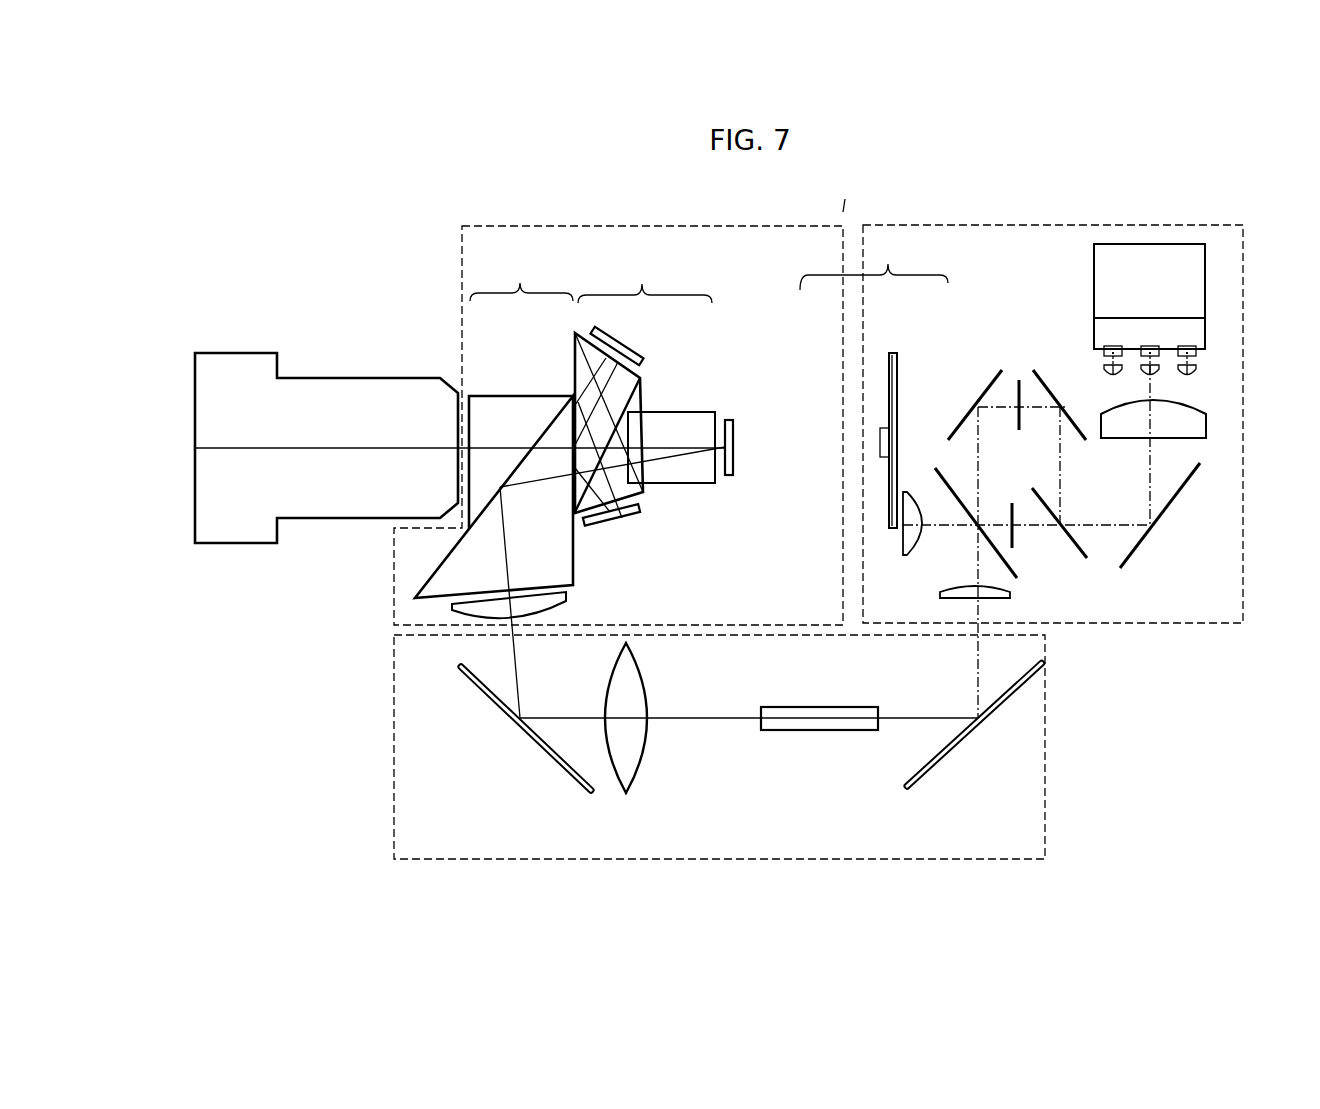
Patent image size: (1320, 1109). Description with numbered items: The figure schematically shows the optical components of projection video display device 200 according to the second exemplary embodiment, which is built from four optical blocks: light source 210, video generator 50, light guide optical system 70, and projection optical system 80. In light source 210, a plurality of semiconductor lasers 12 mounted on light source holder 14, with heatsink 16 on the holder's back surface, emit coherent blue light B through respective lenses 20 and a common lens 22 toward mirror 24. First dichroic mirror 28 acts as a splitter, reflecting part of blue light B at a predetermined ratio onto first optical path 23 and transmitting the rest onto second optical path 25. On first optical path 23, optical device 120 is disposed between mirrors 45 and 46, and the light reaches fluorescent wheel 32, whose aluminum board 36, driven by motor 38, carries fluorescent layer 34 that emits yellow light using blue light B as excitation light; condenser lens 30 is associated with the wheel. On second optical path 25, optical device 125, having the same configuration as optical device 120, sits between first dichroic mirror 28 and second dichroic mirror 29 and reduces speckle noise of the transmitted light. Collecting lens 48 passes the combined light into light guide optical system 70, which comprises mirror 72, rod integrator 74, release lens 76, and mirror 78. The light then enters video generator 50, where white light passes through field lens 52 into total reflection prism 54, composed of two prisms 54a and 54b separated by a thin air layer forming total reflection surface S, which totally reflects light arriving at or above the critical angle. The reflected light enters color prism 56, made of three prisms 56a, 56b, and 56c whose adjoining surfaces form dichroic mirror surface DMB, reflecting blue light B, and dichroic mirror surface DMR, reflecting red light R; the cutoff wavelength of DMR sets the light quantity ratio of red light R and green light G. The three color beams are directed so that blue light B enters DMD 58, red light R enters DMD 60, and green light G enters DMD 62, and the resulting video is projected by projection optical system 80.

The projection optical system 80 is at (372, 378).
The video generator 50 is at (637, 226).
The projection video display device 200 is at (832, 190).
The total reflection prism 54 is at (494, 486).
The prism 54a is at (495, 412).
The prism 54b is at (560, 437).
The total reflection surface S is at (545, 448).
The field lens 52 is at (566, 605).
The color prism 56 is at (646, 391).
The prism 56a is at (627, 385).
The prism 56b is at (685, 418).
The prism 56c is at (630, 490).
The dichroic mirror surface DMB is at (640, 412).
The dichroic mirror surface DMR is at (645, 475).
The DMD 58 is at (627, 348).
The DMD 60 is at (628, 522).
The DMD 62 is at (735, 432).
The blue light B is at (624, 330).
The green light G is at (749, 447).
The red light R is at (605, 540).
The light source 210 is at (1090, 225).
The fluorescent wheel 32 is at (874, 381).
The fluorescent layer 34 is at (898, 365).
The aluminum board 36 is at (890, 360).
The motor 38 is at (880, 428).
The optical device 120 is at (1018, 380).
The mirror 46 is at (985, 395).
The mirror 45 is at (1043, 375).
The heatsink 16 is at (1186, 262).
The light source holder 14 is at (1168, 333).
The semiconductor laser 12 is at (1183, 349).
The lens 20 is at (1195, 372).
The lens 22 is at (1206, 428).
The second optical path 25 is at (1037, 522).
The first optical path 23 is at (1061, 465).
The first dichroic mirror 28 is at (1065, 530).
The mirror 24 is at (1185, 485).
The second dichroic mirror 29 is at (958, 503).
The condenser lens 30 is at (905, 555).
The optical device 125 is at (1013, 535).
The collecting lens 48 is at (963, 600).
The light guide optical system 70 is at (1045, 808).
The mirror 72 is at (1018, 693).
The rod integrator 74 is at (833, 730).
The release lens 76 is at (637, 775).
The mirror 78 is at (565, 770).